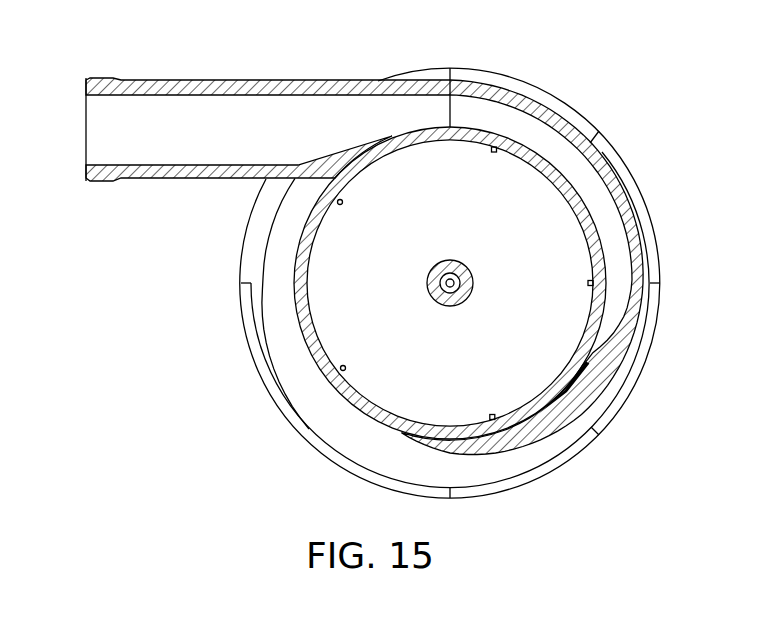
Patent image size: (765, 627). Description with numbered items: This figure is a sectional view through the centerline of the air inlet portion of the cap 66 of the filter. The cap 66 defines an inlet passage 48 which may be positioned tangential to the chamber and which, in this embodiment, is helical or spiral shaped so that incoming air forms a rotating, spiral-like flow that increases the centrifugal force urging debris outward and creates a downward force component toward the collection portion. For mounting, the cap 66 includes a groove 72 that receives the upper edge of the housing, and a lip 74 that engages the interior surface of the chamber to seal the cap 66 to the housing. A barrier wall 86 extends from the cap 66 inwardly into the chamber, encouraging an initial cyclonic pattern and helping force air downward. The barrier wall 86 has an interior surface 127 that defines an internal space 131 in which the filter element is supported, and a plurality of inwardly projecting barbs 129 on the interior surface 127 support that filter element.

The inlet passage 48 is at (108, 133).
The cap 66 is at (606, 89).
The groove 72 is at (322, 455).
The lip 74 is at (300, 412).
The barrier wall 86 is at (583, 353).
The interior surface 127 is at (312, 280).
The inwardly projecting barbs 129 is at (343, 203).
The internal space 131 is at (541, 256).